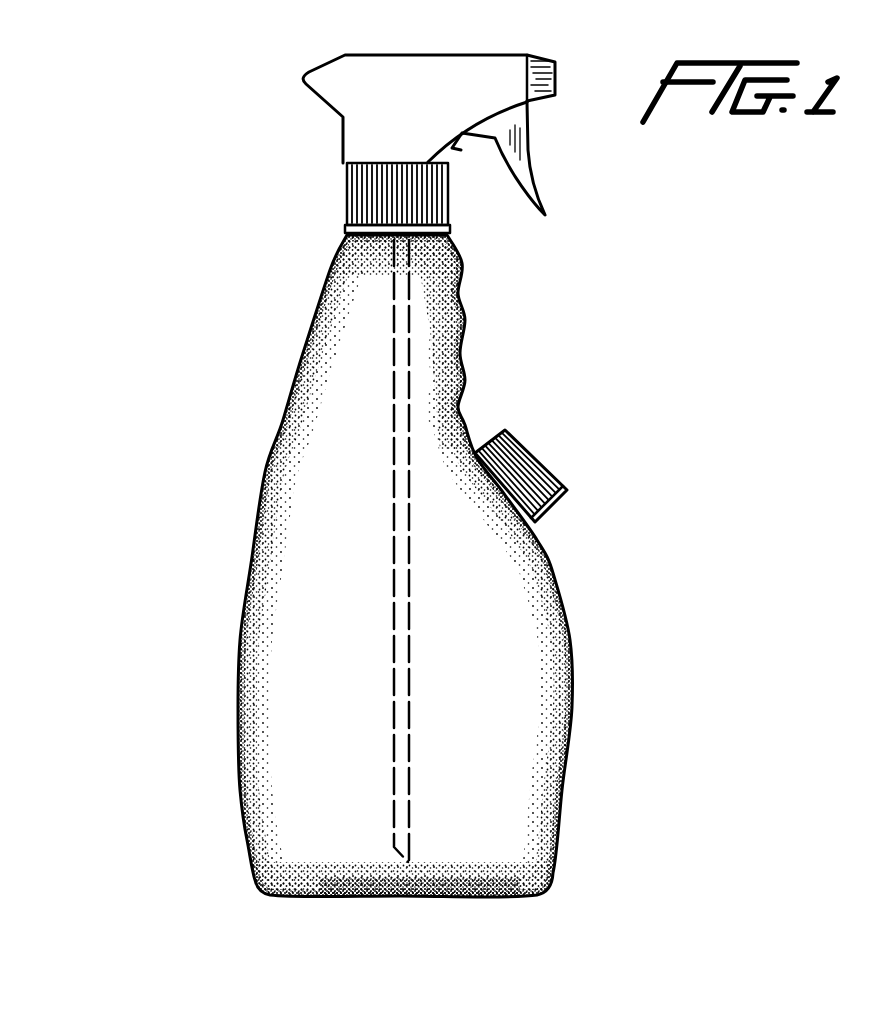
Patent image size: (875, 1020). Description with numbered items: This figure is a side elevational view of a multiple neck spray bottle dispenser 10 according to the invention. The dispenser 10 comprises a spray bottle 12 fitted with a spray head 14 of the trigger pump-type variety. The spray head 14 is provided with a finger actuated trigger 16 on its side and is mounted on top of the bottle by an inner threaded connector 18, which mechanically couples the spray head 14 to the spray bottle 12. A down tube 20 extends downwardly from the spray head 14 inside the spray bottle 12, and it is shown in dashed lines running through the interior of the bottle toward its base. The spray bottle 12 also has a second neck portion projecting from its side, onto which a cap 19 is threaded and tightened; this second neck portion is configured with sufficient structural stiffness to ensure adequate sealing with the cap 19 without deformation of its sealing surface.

The spray bottle dispenser 10 is at (195, 223).
The spray bottle 12 is at (252, 560).
The spray head 14 is at (343, 117).
The trigger 16 is at (525, 145).
The threaded connector 18 is at (347, 200).
The cap 19 is at (533, 490).
The down tube 20 is at (393, 748).